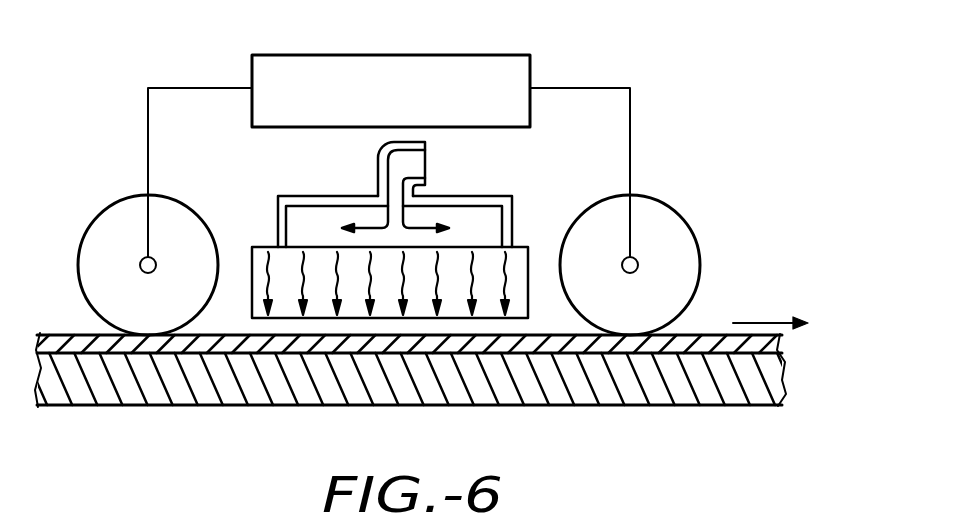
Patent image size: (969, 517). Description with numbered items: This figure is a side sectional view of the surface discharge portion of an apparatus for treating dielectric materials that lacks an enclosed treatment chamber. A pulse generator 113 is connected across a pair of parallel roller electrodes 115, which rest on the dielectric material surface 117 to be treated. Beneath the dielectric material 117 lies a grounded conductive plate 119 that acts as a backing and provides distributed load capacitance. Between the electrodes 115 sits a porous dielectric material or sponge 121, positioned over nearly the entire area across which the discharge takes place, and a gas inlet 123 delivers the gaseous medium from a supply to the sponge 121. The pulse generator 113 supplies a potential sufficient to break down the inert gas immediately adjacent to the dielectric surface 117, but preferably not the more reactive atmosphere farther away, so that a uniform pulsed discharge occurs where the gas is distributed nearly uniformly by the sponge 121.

The pulse generator 113 is at (318, 57).
The roller electrodes 115 is at (107, 226).
The dielectric material surface 117 is at (703, 335).
The grounded conductive plate 119 is at (448, 396).
The porous dielectric sponge 121 is at (473, 268).
The gas inlet 123 is at (395, 173).